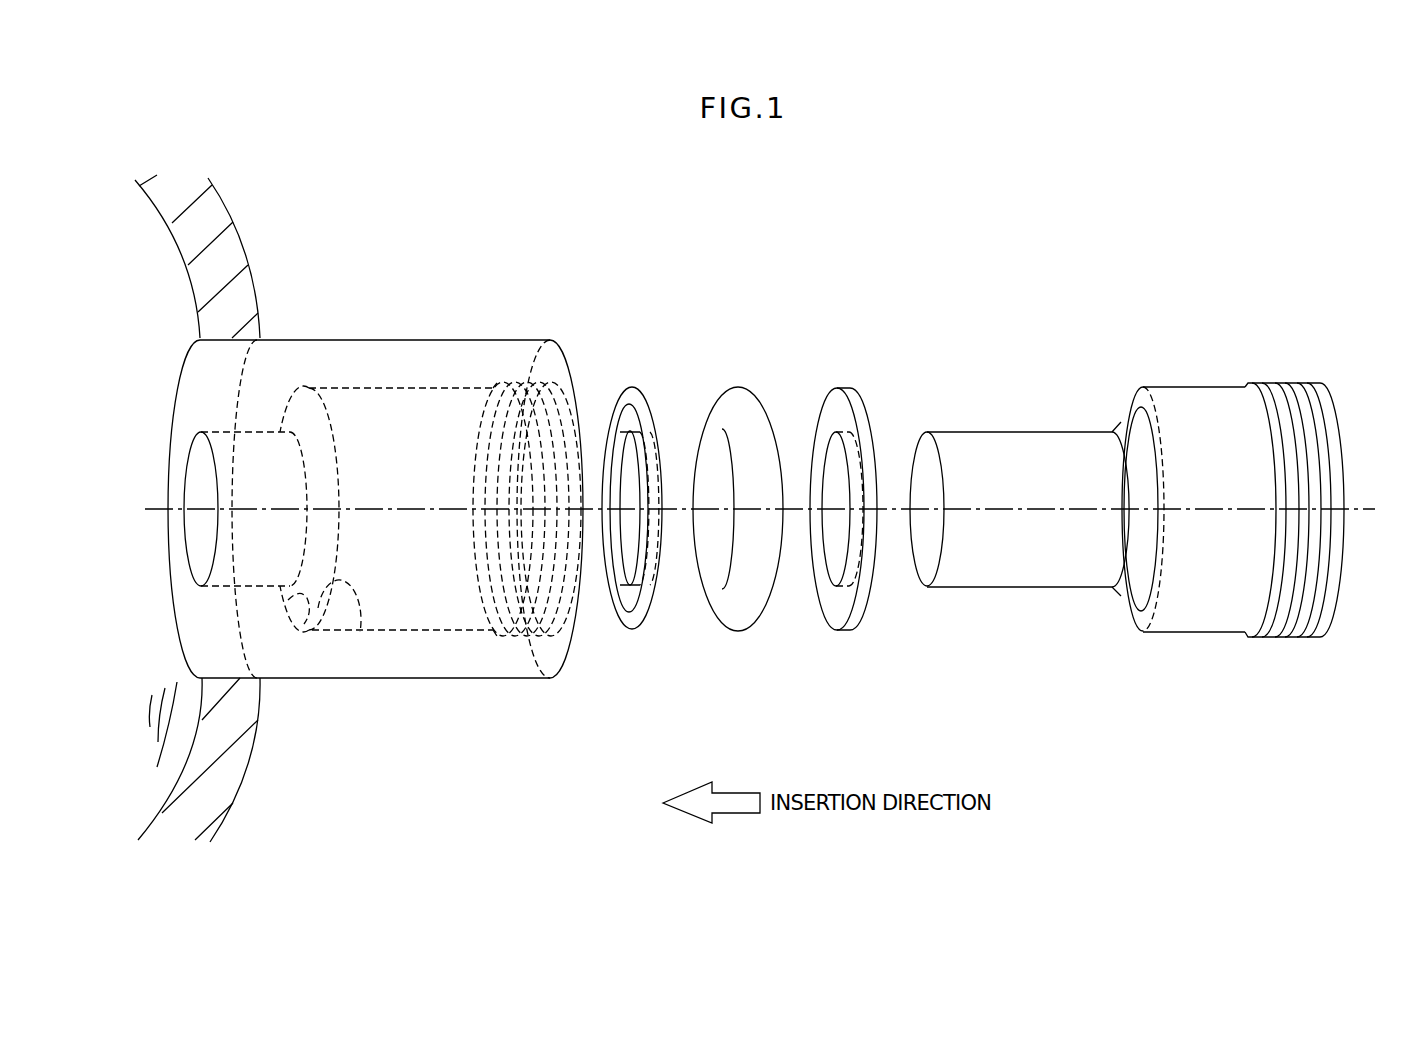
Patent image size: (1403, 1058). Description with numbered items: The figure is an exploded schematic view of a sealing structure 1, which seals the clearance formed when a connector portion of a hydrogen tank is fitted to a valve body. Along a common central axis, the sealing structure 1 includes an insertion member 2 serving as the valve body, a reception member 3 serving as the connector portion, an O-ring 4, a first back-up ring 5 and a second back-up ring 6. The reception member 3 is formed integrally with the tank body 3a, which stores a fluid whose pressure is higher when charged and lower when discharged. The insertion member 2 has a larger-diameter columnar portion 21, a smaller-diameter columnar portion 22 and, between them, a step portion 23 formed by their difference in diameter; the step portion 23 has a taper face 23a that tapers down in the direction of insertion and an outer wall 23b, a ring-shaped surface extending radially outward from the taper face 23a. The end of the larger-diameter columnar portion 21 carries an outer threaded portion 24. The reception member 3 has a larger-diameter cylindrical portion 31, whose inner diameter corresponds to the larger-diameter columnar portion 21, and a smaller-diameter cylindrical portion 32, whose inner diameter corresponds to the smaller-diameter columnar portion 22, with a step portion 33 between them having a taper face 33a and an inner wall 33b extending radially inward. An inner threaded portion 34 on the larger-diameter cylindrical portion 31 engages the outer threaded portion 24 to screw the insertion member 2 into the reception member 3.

The sealing structure 1 is at (1098, 282).
The insertion member 2 is at (1127, 530).
The reception member 3 is at (410, 337).
The tank body 3a is at (223, 248).
The O-ring 4 is at (738, 383).
The first back-up ring 5 is at (846, 383).
The second back-up ring 6 is at (634, 383).
The larger-diameter columnar portion 21 is at (1227, 622).
The smaller-diameter columnar portion 22 is at (958, 570).
The step portion 23 is at (1097, 562).
The taper face 23a is at (1117, 588).
The outer wall 23b is at (1124, 553).
The outer threaded portion 24 is at (1303, 637).
The larger-diameter cylindrical portion 31 is at (455, 613).
The smaller-diameter cylindrical portion 32 is at (265, 573).
The step portion 33 is at (350, 675).
The taper face 33a is at (350, 626).
The inner wall 33b is at (293, 603).
The inner threaded portion 34 is at (529, 636).